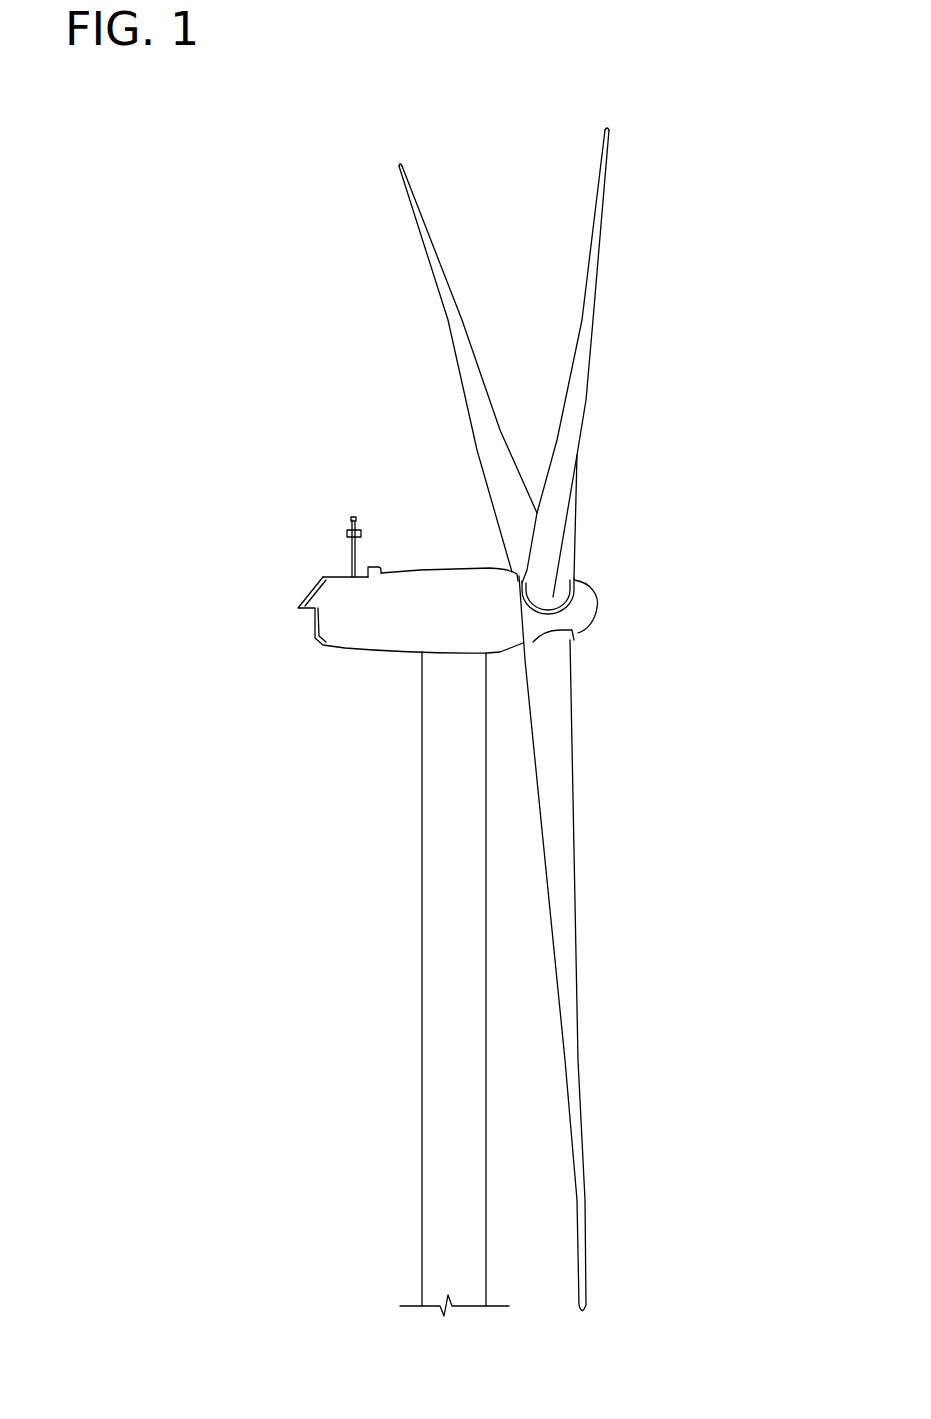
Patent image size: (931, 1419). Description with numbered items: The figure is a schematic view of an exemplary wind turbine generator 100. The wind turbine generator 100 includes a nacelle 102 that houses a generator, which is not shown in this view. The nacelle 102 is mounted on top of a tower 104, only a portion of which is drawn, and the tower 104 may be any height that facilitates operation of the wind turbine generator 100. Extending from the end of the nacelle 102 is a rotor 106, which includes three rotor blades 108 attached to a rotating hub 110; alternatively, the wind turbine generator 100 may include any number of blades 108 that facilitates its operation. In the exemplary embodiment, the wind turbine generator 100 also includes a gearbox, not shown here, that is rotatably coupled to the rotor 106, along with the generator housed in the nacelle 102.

The wind turbine generator 100 is at (285, 211).
The nacelle 102 is at (348, 652).
The tower 104 is at (422, 932).
The rotor 106 is at (652, 346).
The rotor blades 108 is at (436, 252).
The rotating hub 110 is at (595, 610).